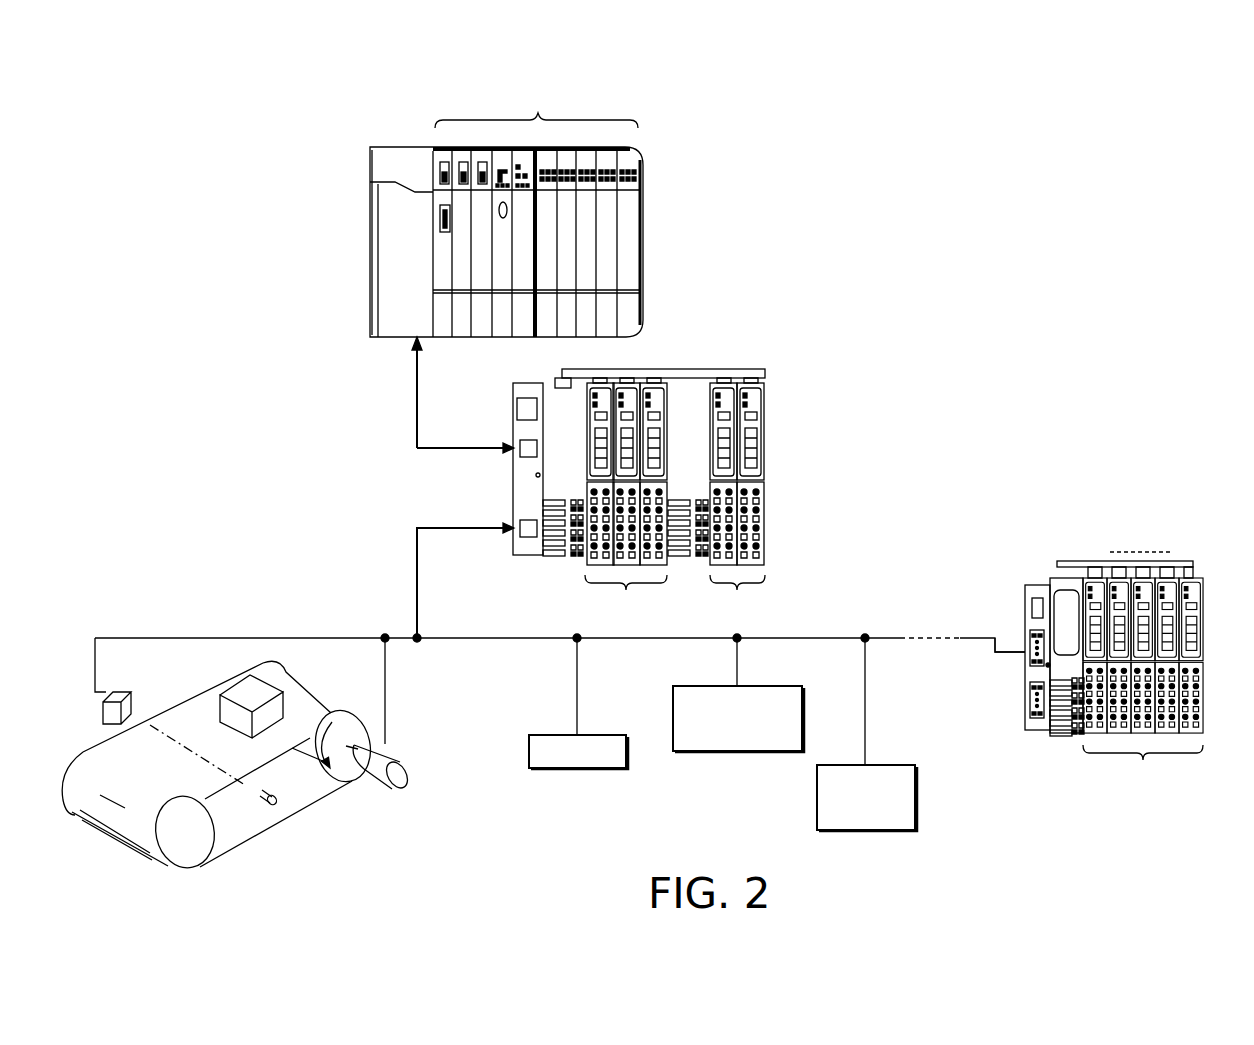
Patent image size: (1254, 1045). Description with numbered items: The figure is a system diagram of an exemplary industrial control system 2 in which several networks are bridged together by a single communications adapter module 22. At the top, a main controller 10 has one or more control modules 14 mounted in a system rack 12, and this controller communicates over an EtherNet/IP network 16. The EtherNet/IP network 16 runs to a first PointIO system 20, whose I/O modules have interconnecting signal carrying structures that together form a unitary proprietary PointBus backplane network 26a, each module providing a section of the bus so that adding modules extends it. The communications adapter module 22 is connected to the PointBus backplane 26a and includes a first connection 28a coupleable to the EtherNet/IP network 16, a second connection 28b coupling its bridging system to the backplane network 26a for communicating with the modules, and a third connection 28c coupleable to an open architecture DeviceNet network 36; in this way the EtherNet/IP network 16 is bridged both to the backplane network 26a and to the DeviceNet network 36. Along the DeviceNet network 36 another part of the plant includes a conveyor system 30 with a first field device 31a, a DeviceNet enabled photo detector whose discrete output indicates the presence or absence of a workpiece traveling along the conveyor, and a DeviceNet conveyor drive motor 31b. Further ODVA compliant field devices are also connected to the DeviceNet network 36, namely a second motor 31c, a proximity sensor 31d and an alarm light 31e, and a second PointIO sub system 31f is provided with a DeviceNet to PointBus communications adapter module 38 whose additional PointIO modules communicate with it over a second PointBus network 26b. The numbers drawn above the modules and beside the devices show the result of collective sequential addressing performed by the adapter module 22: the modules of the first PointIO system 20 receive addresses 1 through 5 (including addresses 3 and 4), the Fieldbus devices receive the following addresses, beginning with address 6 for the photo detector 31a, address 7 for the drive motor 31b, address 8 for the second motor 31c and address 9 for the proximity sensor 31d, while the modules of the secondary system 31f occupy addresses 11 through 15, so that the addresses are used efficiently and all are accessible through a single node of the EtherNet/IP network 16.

The industrial control system 2 is at (148, 128).
The main controller 10 is at (326, 146).
The system rack 12 is at (370, 305).
The control modules 14 is at (539, 113).
The EtherNet/IP network 16 is at (417, 404).
The PointIO system 20 is at (673, 469).
The communications adapter module 22 is at (505, 496).
The PointBus backplane network 26a is at (765, 374).
The second PointBus network 26b is at (1193, 566).
The first connection 28a is at (520, 457).
The second connection 28b is at (555, 381).
The third connection 28c is at (520, 537).
The conveyor system 30 is at (298, 854).
The first field device 31a is at (95, 685).
The conveyor drive motor 31b is at (407, 721).
The second motor 31c is at (552, 703).
The proximity sensor 31d is at (712, 695).
The alarm light 31e is at (817, 798).
The second PointIO sub system 31f is at (981, 711).
The DeviceNet network 36 is at (417, 592).
The DeviceNet to PointBus communications adapter module 38 is at (1124, 651).
The module address 1 is at (600, 459).
The module address 3 is at (653, 459).
The module address 4 is at (723, 459).
The module address 5 is at (750, 459).
The device address 6 is at (95, 723).
The device address 7 is at (423, 795).
The device address 8 is at (510, 752).
The device address 9 is at (653, 720).
The module address 11 is at (1094, 637).
The module address 15 is at (1191, 637).